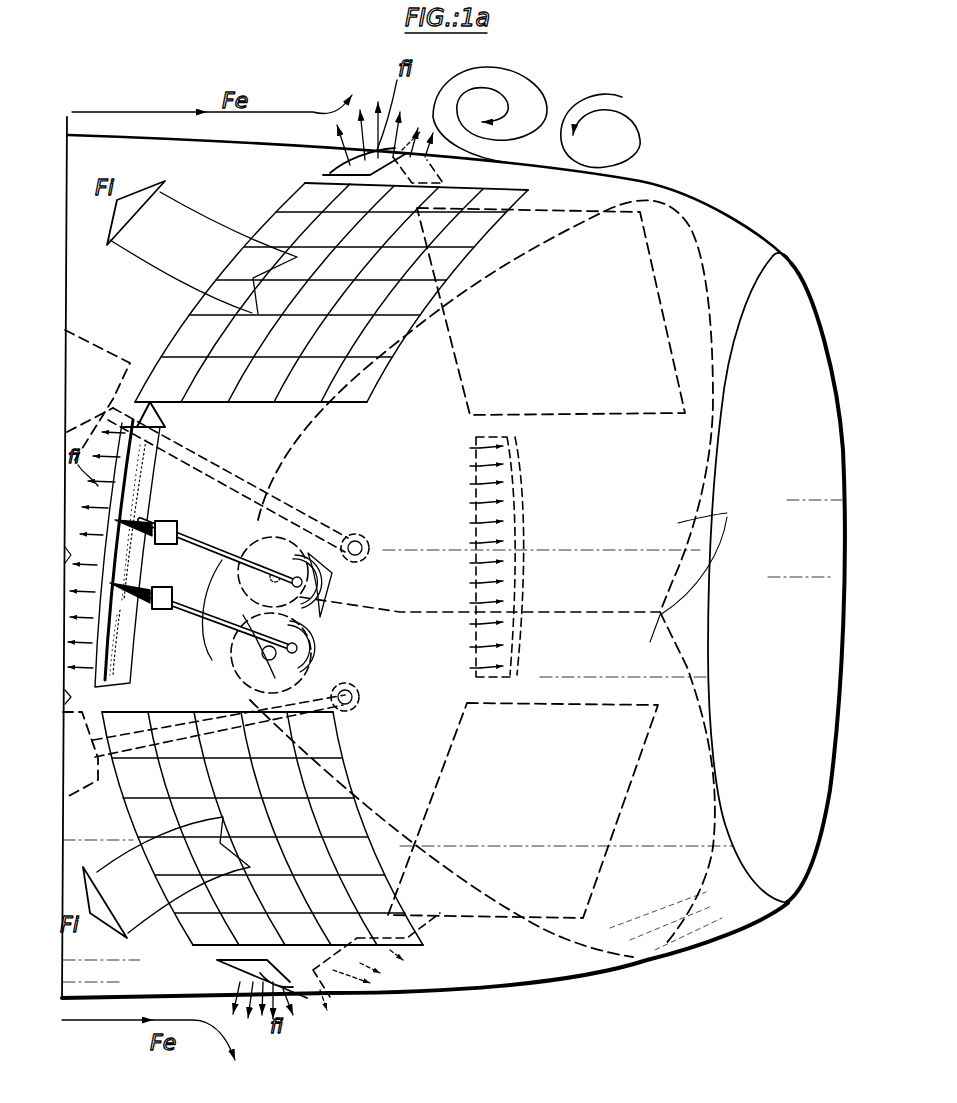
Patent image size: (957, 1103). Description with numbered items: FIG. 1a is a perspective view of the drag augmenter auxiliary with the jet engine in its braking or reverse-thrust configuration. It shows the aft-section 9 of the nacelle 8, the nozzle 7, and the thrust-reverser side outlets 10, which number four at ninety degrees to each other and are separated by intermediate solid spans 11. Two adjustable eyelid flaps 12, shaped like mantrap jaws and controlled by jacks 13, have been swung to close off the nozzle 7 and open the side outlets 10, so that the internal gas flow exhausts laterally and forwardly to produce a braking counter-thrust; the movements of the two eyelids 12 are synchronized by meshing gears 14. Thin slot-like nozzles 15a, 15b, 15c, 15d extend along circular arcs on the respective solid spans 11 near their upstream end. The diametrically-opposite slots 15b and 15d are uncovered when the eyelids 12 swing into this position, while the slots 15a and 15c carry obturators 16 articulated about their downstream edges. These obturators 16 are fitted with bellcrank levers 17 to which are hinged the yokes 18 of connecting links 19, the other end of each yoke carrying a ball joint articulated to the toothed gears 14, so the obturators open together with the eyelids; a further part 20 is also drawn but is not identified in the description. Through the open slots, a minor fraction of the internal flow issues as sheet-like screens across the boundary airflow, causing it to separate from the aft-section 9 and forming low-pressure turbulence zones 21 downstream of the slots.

The nozzle 7 is at (782, 320).
The nacelle 8 is at (133, 132).
The aft-section of the nacelle 9 is at (608, 192).
The thrust-reverser side outlets 10 is at (293, 212).
The intermediate solid spans 11 is at (473, 176).
The eyelid flaps 12 is at (704, 568).
The jacks 13 is at (82, 347).
The meshing gears 14 is at (273, 546).
The slot-like nozzle 15a is at (107, 695).
The slot-like nozzle 15b is at (343, 165).
The slot-like nozzle 15c is at (507, 490).
The slot-like nozzle 15d is at (268, 973).
The obturators 16 is at (118, 651).
The bellcrank levers 17 is at (147, 533).
The yokes 18 is at (172, 546).
The connecting links 19 is at (236, 625).
The actuator plate 20 is at (332, 573).
The low-pressure turbulence zones 21 is at (533, 112).